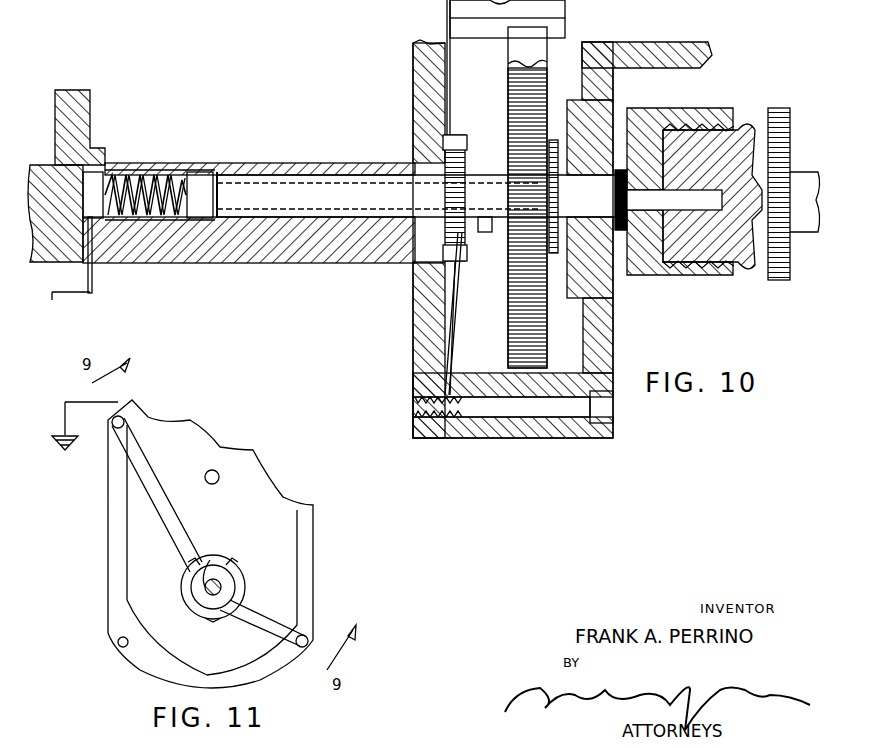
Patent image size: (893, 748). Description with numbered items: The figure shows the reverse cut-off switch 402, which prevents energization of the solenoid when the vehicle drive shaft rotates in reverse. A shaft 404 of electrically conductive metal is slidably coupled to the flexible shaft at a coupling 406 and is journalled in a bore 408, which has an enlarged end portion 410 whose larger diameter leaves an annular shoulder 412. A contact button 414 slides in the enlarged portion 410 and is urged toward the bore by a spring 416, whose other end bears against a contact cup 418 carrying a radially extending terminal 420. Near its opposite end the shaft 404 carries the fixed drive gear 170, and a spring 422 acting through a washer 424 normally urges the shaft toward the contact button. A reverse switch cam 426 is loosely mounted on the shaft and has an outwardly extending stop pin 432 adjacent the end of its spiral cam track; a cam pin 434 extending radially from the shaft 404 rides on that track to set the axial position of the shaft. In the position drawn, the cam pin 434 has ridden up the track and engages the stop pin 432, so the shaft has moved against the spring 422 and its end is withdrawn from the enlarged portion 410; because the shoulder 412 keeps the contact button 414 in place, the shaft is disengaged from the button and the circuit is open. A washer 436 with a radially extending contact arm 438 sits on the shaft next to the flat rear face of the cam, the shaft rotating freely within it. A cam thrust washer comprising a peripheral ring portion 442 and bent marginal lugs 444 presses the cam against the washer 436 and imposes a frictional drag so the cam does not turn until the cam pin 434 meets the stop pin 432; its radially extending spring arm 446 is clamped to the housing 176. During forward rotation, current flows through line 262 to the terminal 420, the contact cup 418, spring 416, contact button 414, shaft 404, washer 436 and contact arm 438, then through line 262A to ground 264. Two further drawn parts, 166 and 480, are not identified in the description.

In FIG. 10, the flange 166 is at (775, 285).
In FIG. 10, the drive gear 170 is at (572, 28).
In FIG. 10, the housing 176 is at (488, 448).
In FIG. 11, the housing 176 is at (315, 567).
In FIG. 10, the line 262 is at (52, 300).
In FIG. 11, the line 262A is at (120, 416).
In FIG. 11, the ground 264 is at (62, 432).
In FIG. 10, the reverse cut-off switch 402 is at (351, 281).
In FIG. 10, the shaft 404 is at (302, 185).
In FIG. 10, the slidable coupling 406 is at (678, 193).
In FIG. 10, the bore 408 is at (238, 222).
In FIG. 10, the enlarged end portion 410 is at (160, 170).
In FIG. 10, the annular shoulder 412 is at (218, 165).
In FIG. 10, the contact button 414 is at (205, 150).
In FIG. 10, the spring 416 is at (133, 172).
In FIG. 10, the contact cup 418 is at (108, 172).
In FIG. 10, the terminal 420 is at (94, 276).
In FIG. 10, the spring 422 is at (595, 128).
In FIG. 10, the washer 424 is at (556, 140).
In FIG. 10, the reverse switch cam 426 is at (440, 288).
In FIG. 10, the stop pin 432 is at (488, 233).
In FIG. 11, the stop pin 432 is at (203, 588).
In FIG. 10, the cam pin 434 is at (481, 262).
In FIG. 11, the cam pin 434 is at (208, 562).
In FIG. 10, the washer 436 is at (440, 163).
In FIG. 10, the contact arm 438 is at (430, 55).
In FIG. 11, the contact arm 438 is at (150, 478).
In FIG. 11, the peripheral ring portion 442 is at (225, 560).
In FIG. 11, the bent marginal lugs 444 is at (236, 575).
In FIG. 10, the spring arm 446 is at (455, 328).
In FIG. 11, the spring arm 446 is at (272, 614).
In FIG. 10, the collar 480 is at (470, 205).